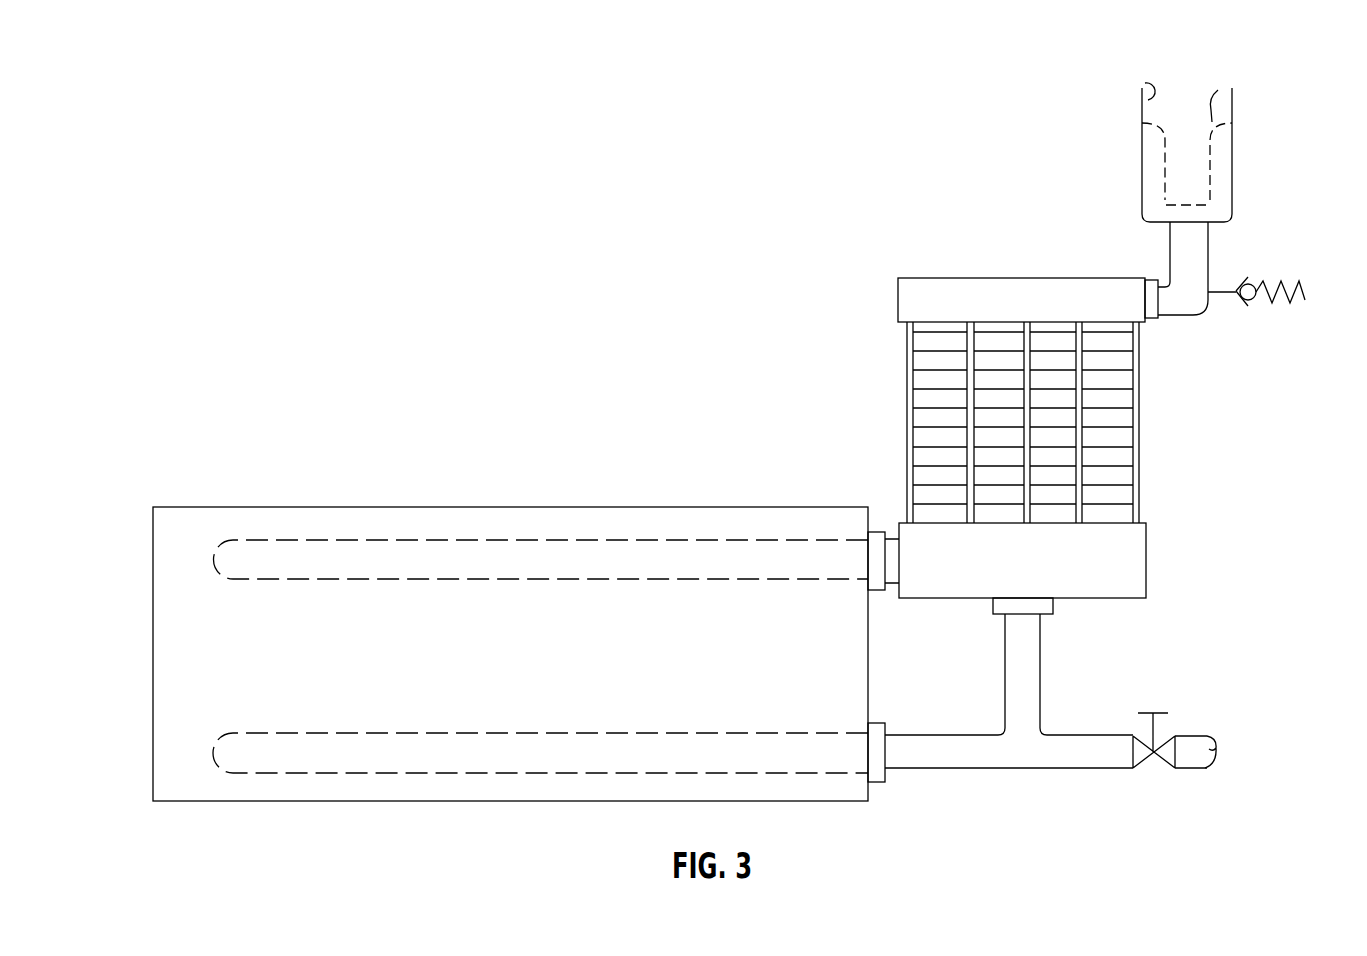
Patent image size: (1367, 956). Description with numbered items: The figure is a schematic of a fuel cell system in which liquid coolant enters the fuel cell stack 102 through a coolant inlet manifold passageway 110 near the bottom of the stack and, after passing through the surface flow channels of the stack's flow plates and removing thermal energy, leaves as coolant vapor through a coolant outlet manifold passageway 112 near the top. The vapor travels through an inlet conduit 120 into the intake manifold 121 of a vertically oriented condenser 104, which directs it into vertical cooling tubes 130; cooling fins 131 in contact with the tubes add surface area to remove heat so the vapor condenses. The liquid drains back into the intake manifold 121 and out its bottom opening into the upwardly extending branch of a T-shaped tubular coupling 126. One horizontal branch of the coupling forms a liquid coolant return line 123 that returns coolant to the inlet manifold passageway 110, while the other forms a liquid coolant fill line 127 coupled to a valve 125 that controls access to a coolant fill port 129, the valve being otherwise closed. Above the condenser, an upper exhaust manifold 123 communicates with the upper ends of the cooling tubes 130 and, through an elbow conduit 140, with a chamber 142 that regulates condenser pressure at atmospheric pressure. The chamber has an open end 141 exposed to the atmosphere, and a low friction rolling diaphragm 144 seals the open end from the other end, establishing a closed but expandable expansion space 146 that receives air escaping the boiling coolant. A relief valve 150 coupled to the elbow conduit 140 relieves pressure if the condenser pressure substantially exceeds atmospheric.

The fuel cell stack 102 is at (470, 505).
The condenser 104 is at (999, 537).
The coolant inlet manifold passageway 110 is at (278, 768).
The coolant outlet manifold passageway 112 is at (313, 552).
The inlet conduit 120 is at (890, 535).
The intake manifold 121 is at (953, 598).
The liquid coolant return line 123 is at (898, 302).
The valve 125 is at (1153, 752).
The T-shaped tubular coupling 126 is at (1018, 771).
The liquid coolant fill line 127 is at (1103, 771).
The coolant fill port 129 is at (1203, 771).
The cooling tubes 130 is at (967, 380).
The cooling fins 131 is at (942, 408).
The elbow conduit 140 is at (1167, 279).
The open end 141 is at (1145, 83).
The chamber 142 is at (1142, 183).
The rolling diaphragm 144 is at (1218, 90).
The expansion space 146 is at (1212, 211).
The relief valve 150 is at (1283, 300).